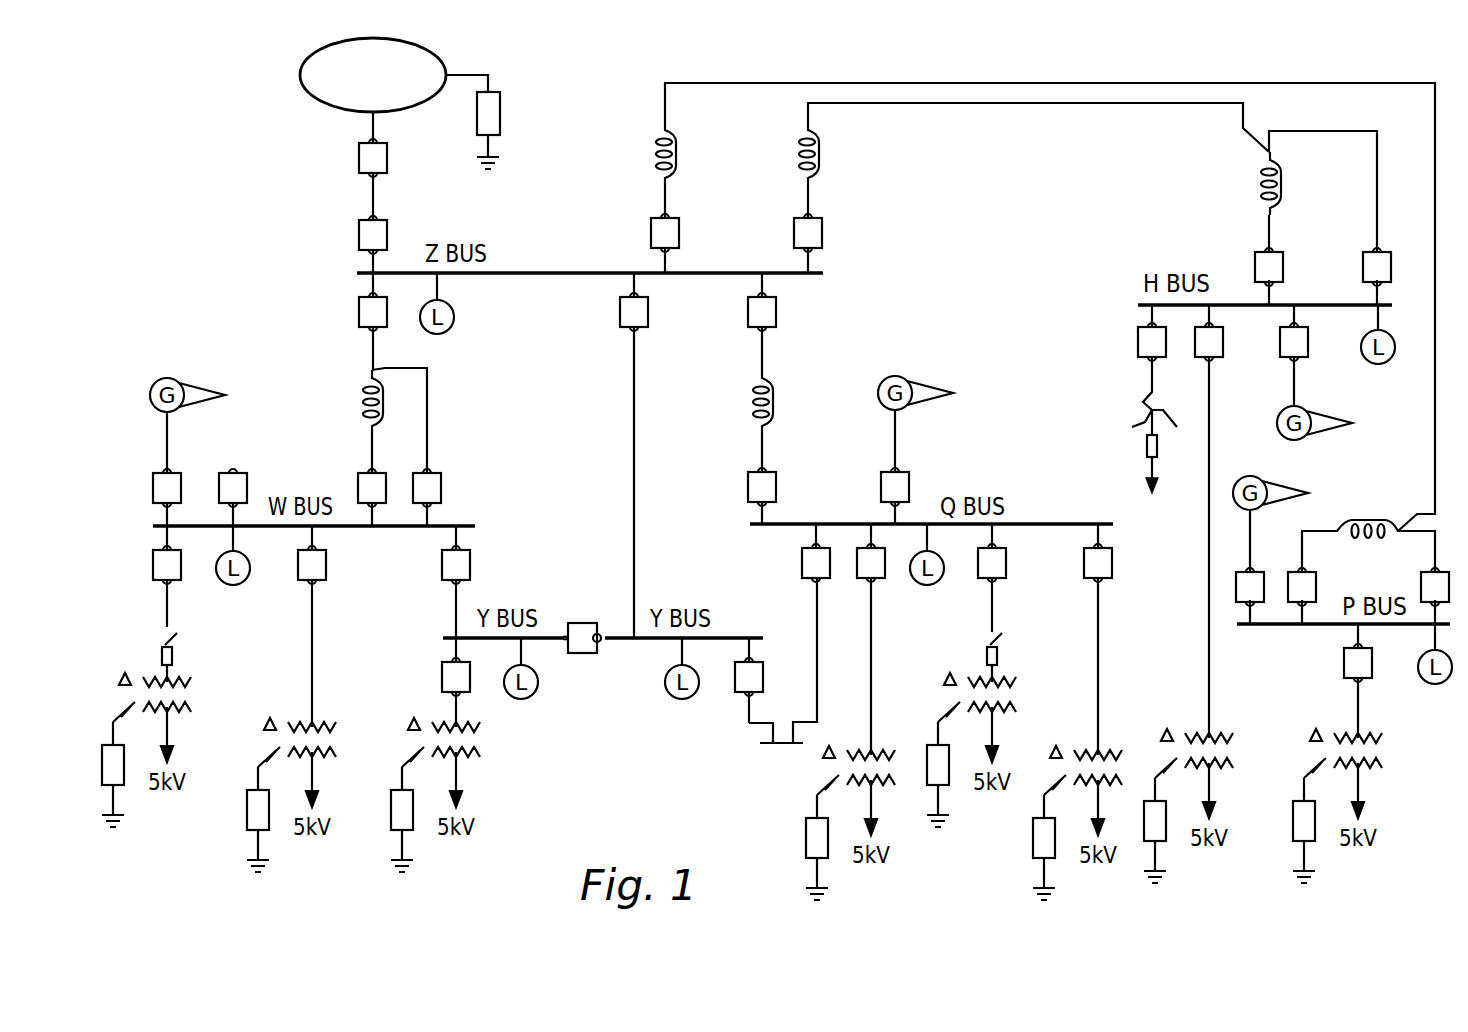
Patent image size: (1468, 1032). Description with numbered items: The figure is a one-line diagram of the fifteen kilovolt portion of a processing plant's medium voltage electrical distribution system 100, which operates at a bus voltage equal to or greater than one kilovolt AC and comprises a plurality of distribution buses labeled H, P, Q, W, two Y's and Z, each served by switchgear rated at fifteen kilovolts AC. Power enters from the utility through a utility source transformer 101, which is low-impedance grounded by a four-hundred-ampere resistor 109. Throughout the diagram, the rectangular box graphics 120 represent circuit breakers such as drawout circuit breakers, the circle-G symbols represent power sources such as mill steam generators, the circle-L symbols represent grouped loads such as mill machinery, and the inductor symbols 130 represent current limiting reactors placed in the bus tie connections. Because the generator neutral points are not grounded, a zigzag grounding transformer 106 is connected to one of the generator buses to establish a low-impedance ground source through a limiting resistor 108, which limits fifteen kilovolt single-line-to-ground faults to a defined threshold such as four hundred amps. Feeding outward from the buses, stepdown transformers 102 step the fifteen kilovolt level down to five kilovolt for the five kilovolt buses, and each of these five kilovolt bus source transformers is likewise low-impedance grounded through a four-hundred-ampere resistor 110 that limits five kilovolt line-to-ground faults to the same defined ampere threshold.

The electrical distribution system 100 is at (201, 166).
The utility source transformer 101 is at (310, 97).
The stepdown transformer 102 is at (205, 678).
The zigzag grounding transformer 106 is at (1145, 410).
The limiting resistor 108 is at (1147, 447).
The resistor 109 is at (500, 112).
The resistor 110 is at (125, 765).
The circuit breaker 120 is at (357, 160).
The current limiting reactor 130 is at (818, 152).